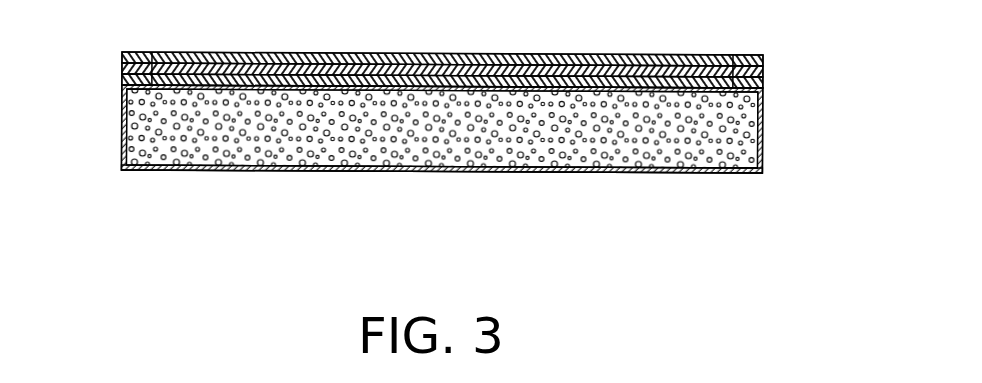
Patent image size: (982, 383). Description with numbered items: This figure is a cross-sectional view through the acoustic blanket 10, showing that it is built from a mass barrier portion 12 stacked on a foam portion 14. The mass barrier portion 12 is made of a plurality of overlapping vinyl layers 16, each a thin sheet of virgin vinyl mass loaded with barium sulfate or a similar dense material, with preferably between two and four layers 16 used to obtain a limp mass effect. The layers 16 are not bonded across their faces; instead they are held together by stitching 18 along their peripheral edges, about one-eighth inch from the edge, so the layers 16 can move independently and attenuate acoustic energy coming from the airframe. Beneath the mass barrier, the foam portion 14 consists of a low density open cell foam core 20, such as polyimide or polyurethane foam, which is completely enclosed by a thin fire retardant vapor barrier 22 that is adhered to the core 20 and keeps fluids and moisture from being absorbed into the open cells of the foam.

The acoustic blanket 10 is at (108, 185).
The mass barrier portion 12 is at (780, 71).
The foam portion 14 is at (779, 138).
The vinyl layers 16 is at (525, 67).
The stitching 18 is at (152, 52).
The foam core 20 is at (230, 150).
The vapor barrier 22 is at (312, 170).